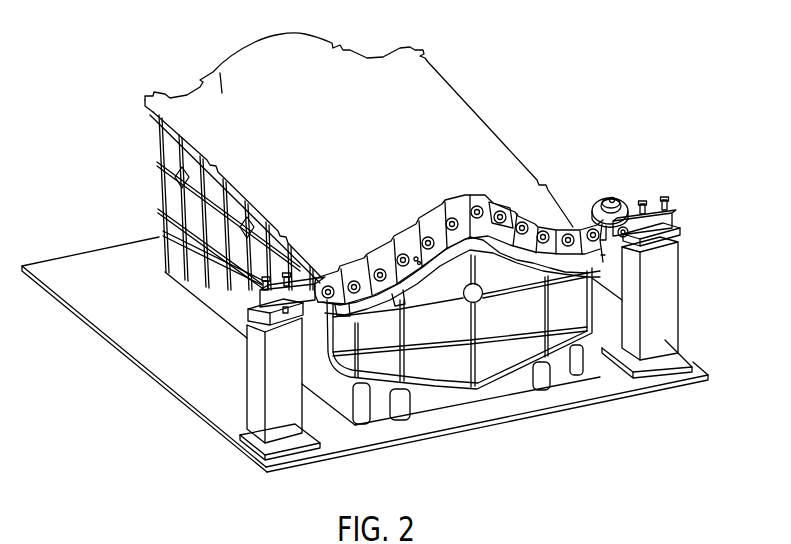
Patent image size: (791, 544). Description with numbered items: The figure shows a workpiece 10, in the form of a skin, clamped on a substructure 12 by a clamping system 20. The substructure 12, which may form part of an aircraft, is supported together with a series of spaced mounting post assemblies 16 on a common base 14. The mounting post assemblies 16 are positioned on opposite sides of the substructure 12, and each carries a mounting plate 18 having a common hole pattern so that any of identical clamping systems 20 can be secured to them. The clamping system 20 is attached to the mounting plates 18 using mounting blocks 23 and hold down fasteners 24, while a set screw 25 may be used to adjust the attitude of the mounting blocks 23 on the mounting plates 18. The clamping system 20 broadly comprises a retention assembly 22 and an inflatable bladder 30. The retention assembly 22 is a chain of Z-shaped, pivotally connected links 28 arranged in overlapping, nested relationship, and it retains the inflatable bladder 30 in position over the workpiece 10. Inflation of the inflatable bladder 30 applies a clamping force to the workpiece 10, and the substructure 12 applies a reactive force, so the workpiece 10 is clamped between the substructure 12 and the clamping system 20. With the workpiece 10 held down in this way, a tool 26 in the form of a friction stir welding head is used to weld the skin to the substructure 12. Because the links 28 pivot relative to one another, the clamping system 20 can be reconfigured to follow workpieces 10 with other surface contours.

The workpiece 10 is at (351, 222).
The substructure 12 is at (177, 175).
The common base 14 is at (86, 263).
The mounting post assemblies 16 is at (258, 385).
The mounting plate 18 is at (258, 320).
The clamping system 20 is at (471, 297).
The retention assembly 22 is at (503, 208).
The mounting blocks 23 is at (258, 307).
The hold down fasteners 24 is at (645, 200).
The set screw 25 is at (664, 198).
The tool 26 is at (604, 196).
The links 28 is at (480, 218).
The inflatable bladder 30 is at (418, 263).